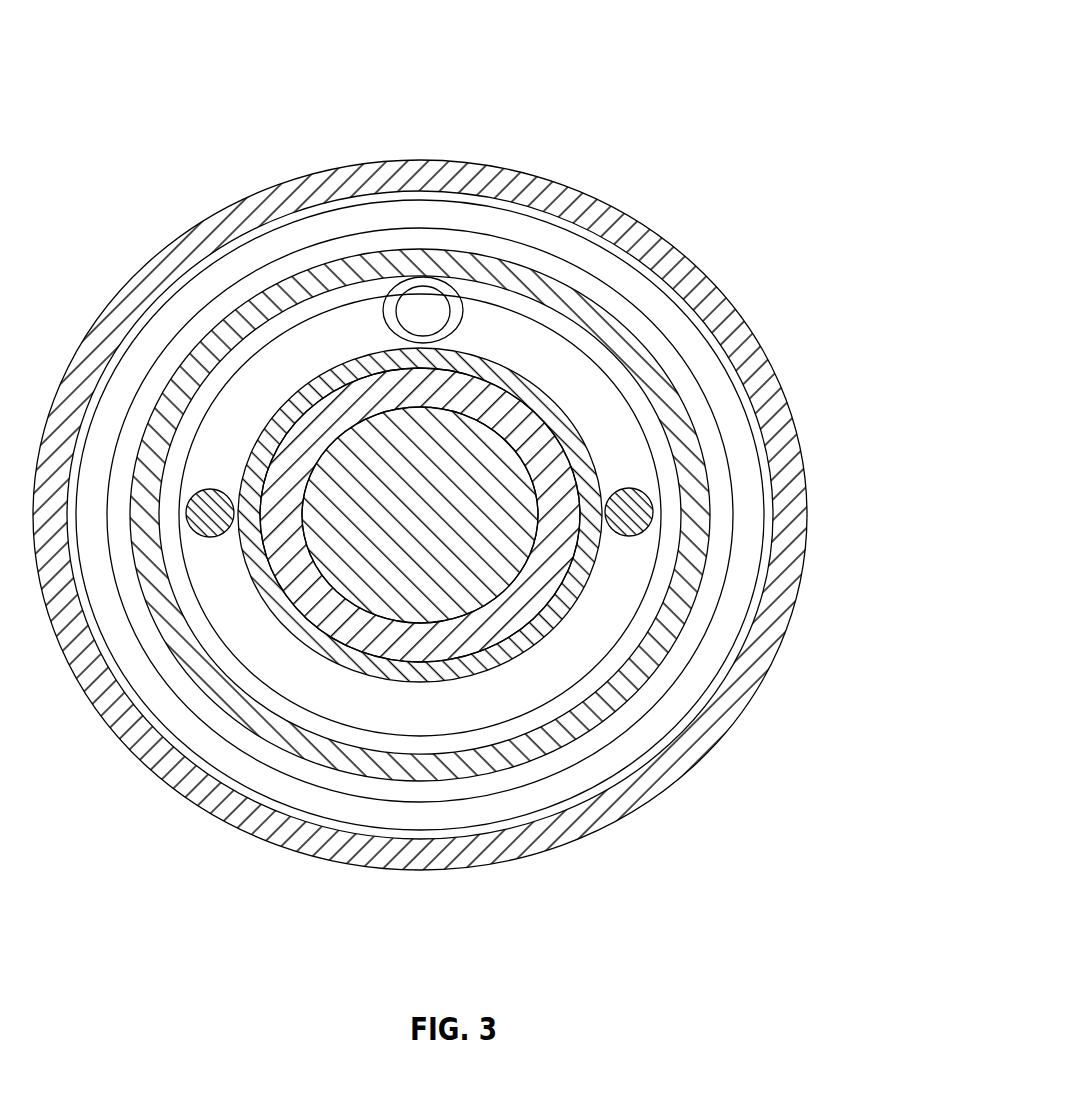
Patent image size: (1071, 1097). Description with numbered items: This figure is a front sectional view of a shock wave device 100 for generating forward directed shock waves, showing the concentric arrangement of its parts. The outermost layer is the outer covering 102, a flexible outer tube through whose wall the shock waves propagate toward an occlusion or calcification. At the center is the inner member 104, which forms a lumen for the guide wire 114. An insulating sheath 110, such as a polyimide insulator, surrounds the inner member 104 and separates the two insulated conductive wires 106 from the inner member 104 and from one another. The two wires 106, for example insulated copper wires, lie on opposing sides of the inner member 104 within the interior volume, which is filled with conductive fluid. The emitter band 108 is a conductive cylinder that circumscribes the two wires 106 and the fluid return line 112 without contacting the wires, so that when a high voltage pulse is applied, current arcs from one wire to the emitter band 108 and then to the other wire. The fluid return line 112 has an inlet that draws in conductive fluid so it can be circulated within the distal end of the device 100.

The shock wave device 100 is at (130, 48).
The outer covering 102 is at (620, 226).
The inner member 104 is at (483, 640).
The insulated conductive wires 106 is at (828, 617).
The emitter band 108 is at (631, 357).
The insulating sheath 110 is at (543, 626).
The fluid return line 112 is at (433, 302).
The guide wire 114 is at (347, 555).